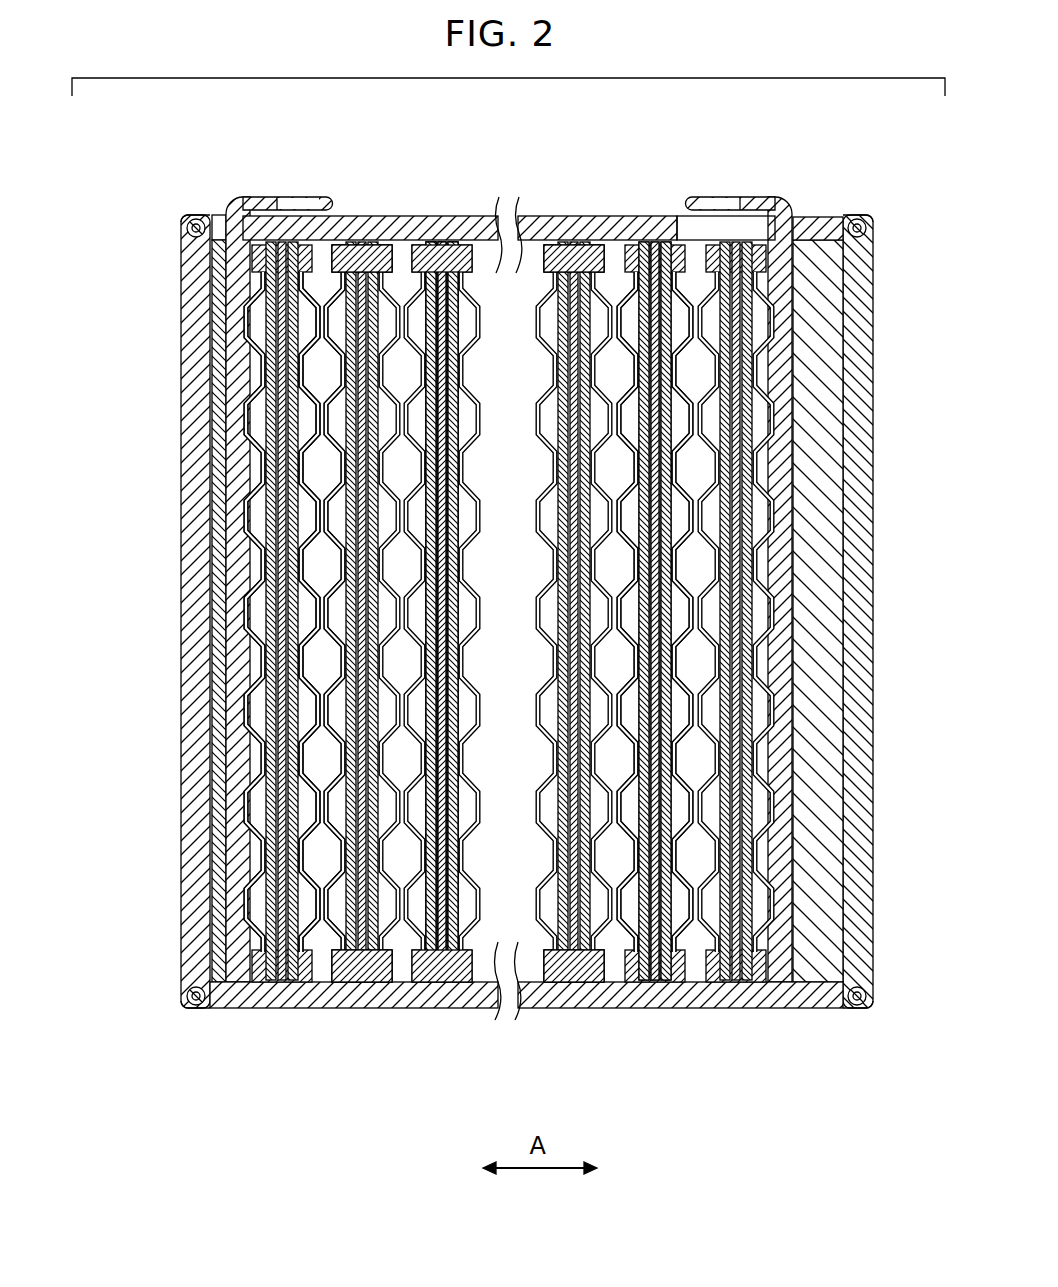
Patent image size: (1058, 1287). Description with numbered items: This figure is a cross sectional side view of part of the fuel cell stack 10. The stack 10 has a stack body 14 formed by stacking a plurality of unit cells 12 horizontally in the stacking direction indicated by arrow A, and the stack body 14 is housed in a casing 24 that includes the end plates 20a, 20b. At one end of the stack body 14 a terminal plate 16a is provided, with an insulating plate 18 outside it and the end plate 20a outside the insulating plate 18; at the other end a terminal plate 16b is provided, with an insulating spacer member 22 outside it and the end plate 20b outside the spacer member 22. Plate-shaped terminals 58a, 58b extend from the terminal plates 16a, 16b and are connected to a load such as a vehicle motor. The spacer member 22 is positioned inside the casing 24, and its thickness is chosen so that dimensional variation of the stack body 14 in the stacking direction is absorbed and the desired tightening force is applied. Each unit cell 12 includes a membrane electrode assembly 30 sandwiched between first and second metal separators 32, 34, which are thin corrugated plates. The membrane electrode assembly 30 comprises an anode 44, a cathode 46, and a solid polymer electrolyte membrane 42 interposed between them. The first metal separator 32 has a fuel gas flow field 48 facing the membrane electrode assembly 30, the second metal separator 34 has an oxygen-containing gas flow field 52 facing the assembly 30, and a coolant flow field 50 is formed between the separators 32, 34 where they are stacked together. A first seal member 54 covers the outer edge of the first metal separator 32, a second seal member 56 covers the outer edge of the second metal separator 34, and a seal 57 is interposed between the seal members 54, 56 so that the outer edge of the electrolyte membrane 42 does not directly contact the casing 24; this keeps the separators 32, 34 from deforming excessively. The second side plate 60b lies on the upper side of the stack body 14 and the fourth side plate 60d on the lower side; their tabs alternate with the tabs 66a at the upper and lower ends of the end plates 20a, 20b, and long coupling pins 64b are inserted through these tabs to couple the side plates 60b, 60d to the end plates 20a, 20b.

The fuel cell stack 10 is at (701, 126).
The unit cell 12 is at (284, 1000).
The stack body 14 is at (509, 700).
The terminal plate 16a is at (230, 352).
The terminal plate 16b is at (786, 318).
The insulating plate 18 is at (214, 372).
The end plate 20a is at (178, 304).
The end plate 20b is at (877, 293).
The insulating spacer member 22 is at (813, 240).
The casing 24 is at (526, 605).
The membrane electrode assembly 30 is at (505, 1053).
The first metal separator 32 is at (618, 975).
The second metal separator 34 is at (657, 986).
The solid polymer electrolyte membrane 42 is at (443, 962).
The anode 44 is at (421, 962).
The cathode 46 is at (464, 962).
The fuel gas flow field 48 is at (306, 513).
The coolant flow field 50 is at (324, 662).
The oxygen-containing gas flow field 52 is at (268, 493).
The first seal member 54 is at (391, 244).
The second seal member 56 is at (492, 245).
The seal 57 is at (350, 242).
The terminal 58a is at (328, 204).
The terminal 58b is at (697, 204).
The second side plate 60b is at (655, 216).
The fourth side plate 60d is at (332, 992).
The coupling pin 64b is at (209, 217).
The tab 66a is at (184, 229).